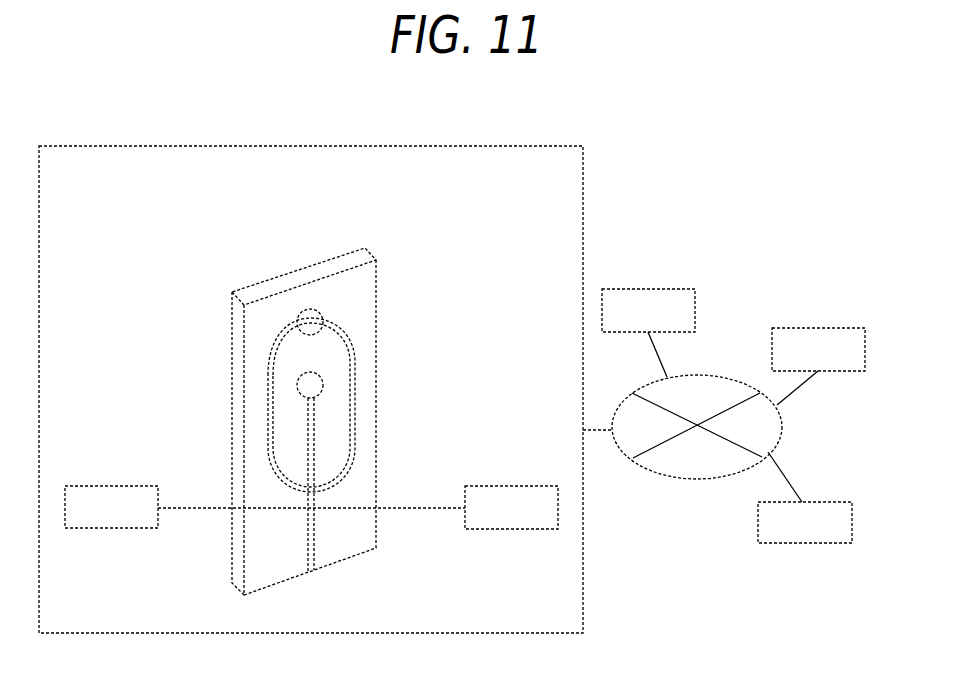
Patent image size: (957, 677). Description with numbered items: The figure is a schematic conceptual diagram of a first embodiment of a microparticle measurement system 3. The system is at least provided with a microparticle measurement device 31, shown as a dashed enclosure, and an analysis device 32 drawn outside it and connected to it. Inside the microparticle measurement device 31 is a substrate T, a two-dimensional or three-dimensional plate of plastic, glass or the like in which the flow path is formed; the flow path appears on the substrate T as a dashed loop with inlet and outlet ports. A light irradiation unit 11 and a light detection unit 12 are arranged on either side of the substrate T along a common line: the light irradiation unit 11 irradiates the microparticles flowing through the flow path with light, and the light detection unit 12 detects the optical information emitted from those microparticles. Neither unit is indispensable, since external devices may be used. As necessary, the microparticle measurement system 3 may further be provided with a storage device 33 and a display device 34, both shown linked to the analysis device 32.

The microparticle measurement system 3 is at (812, 172).
The microparticle measurement device 31 is at (577, 188).
The substrate T is at (308, 278).
The light irradiation unit 11 is at (111, 507).
The light detection unit 12 is at (511, 507).
The analysis device 32 is at (648, 333).
The storage device 33 is at (818, 366).
The display device 34 is at (805, 497).